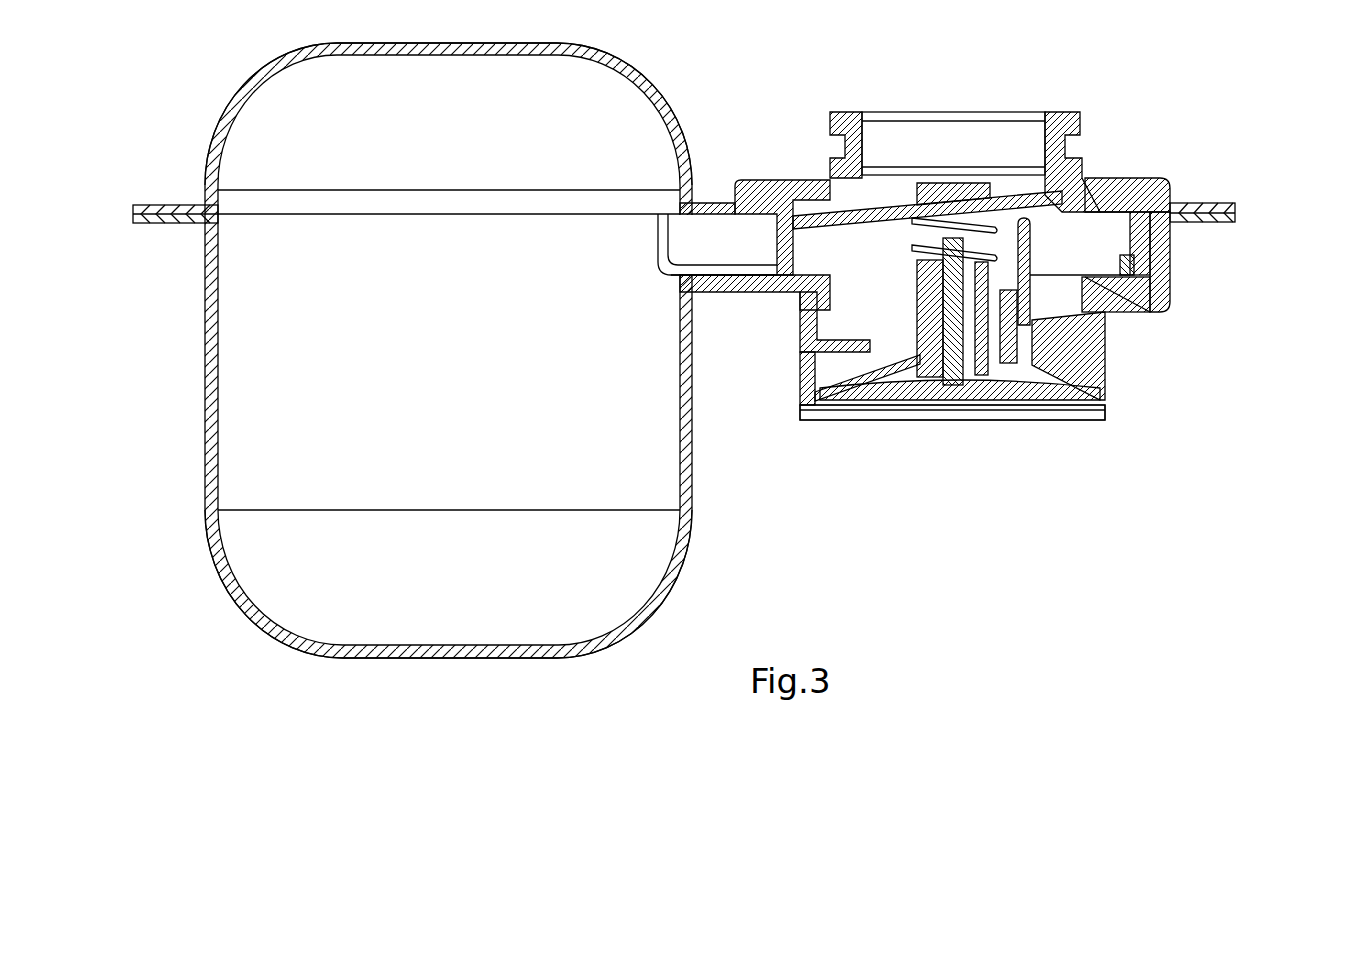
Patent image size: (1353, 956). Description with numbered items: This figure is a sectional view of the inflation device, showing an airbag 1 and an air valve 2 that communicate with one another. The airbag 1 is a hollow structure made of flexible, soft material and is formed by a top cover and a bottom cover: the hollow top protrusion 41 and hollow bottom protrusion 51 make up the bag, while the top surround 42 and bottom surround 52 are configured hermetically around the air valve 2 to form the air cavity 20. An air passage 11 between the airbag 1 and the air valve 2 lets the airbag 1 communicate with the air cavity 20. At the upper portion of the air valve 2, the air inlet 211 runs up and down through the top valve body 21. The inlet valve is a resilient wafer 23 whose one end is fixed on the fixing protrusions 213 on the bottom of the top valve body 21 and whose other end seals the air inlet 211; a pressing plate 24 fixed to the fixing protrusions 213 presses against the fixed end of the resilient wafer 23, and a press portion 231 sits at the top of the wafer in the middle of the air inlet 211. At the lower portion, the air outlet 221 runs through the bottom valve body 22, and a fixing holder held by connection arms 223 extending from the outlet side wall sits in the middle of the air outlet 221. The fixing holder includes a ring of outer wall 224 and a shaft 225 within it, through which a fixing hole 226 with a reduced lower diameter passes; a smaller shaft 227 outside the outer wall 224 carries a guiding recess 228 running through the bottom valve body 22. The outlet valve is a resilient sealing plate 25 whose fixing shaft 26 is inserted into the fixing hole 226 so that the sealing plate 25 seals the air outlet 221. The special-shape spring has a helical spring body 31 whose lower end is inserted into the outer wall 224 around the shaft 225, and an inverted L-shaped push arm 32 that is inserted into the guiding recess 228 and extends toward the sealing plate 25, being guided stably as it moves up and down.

The airbag 1 is at (188, 382).
The air passage 11 is at (711, 250).
The air valve 2 is at (1150, 410).
The air cavity 20 is at (1072, 235).
The top valve body 21 is at (1070, 118).
The air inlet 211 is at (955, 130).
The fixing protrusions 213 is at (777, 248).
The bottom valve body 22 is at (1108, 398).
The air outlet 221 is at (963, 410).
The connection arms 223 is at (862, 365).
The outer wall 224 is at (810, 325).
The shaft 225 is at (985, 350).
The fixing hole 226 is at (940, 330).
The shaft 227 is at (1045, 295).
The guiding recess 228 is at (1048, 340).
The resilient wafer 23 is at (1032, 200).
The press portion 231 is at (921, 192).
The pressing plate 24 is at (800, 215).
The sealing plate 25 is at (1048, 378).
The fixing shaft 26 is at (1033, 267).
The spring body 31 is at (858, 350).
The push arm 32 is at (1027, 285).
The top protrusion 41 is at (245, 100).
The top surround 42 is at (1155, 182).
The bottom protrusion 51 is at (240, 600).
The bottom surround 52 is at (1232, 213).